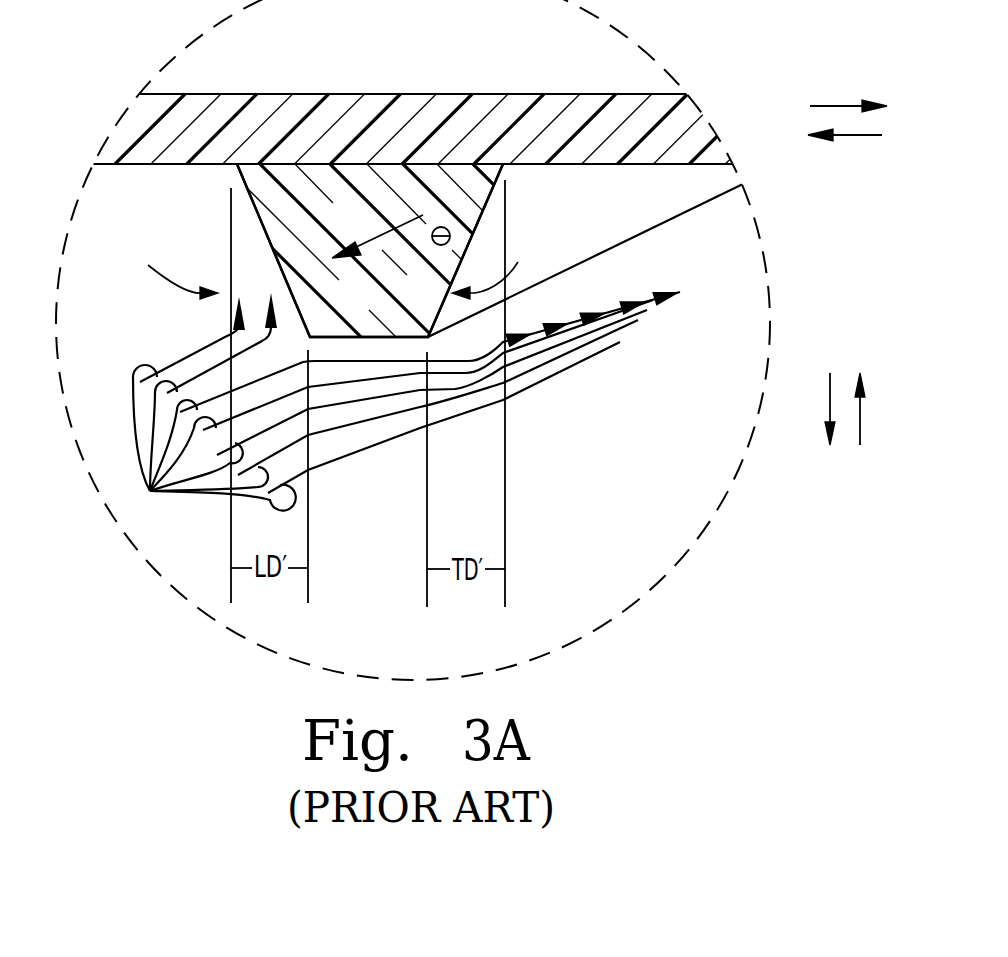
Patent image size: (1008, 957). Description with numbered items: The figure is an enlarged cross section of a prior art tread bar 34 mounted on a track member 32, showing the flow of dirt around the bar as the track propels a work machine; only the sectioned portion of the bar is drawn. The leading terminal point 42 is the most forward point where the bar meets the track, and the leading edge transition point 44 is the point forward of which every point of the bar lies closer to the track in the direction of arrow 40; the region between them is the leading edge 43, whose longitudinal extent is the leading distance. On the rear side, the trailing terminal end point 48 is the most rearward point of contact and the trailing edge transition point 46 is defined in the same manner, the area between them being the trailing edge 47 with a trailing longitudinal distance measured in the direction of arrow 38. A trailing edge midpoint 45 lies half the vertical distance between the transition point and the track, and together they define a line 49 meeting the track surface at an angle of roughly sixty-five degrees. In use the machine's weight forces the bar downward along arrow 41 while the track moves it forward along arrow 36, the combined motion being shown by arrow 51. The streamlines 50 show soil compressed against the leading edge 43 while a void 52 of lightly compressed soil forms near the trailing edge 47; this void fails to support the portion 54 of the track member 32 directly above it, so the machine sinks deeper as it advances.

The track member 32 is at (302, 107).
The tread bar 34 is at (172, 266).
The arrow 36 is at (853, 138).
The arrow 38 is at (838, 104).
The arrow 40 is at (860, 418).
The arrow 41 is at (828, 400).
The leading terminal point 42 is at (237, 165).
The leading edge 43 is at (264, 227).
The leading edge transition point 44 is at (311, 335).
The trailing edge midpoint 45 is at (462, 260).
The trailing edge transition point 46 is at (428, 336).
The trailing edge 47 is at (504, 270).
The trailing terminal end point 48 is at (506, 164).
The line 49 is at (463, 167).
The streamlines 50 is at (398, 401).
The arrow 51 is at (378, 236).
The void 52 is at (690, 210).
The portion of the track member 54 is at (673, 156).